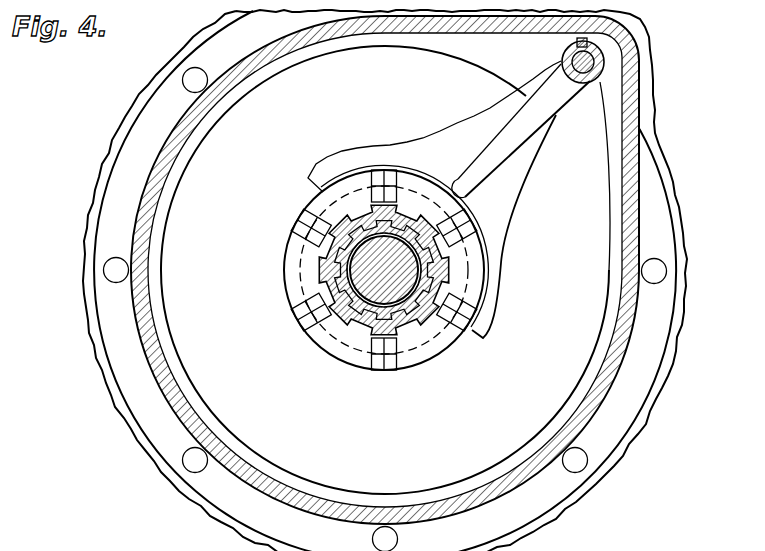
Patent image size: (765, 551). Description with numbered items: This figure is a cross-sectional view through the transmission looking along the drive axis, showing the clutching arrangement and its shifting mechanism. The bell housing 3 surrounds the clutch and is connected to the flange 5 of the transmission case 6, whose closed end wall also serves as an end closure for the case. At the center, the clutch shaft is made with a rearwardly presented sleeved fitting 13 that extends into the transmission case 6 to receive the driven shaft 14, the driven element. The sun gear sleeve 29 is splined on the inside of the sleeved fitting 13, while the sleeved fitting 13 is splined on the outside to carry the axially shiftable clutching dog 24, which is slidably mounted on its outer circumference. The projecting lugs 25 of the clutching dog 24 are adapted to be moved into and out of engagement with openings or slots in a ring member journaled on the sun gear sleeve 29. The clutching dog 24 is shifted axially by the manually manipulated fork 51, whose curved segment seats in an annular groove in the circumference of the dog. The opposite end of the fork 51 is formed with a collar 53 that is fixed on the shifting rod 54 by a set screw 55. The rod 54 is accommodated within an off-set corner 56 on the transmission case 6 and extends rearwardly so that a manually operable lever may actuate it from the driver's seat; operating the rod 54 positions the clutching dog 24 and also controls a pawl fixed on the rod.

The bell housing 3 is at (667, 370).
The flange 5 is at (662, 305).
The transmission case 6 is at (633, 203).
The sleeved fitting 13 is at (352, 220).
The driven shaft 14 is at (420, 310).
The clutching dog 24 is at (295, 257).
The projecting lugs 25 is at (370, 363).
The sun gear sleeve 29 is at (347, 270).
The fork 51 is at (517, 104).
The collar 53 is at (604, 56).
The shifting rod 54 is at (597, 83).
The set screw 55 is at (575, 41).
The off-set corner 56 is at (641, 95).